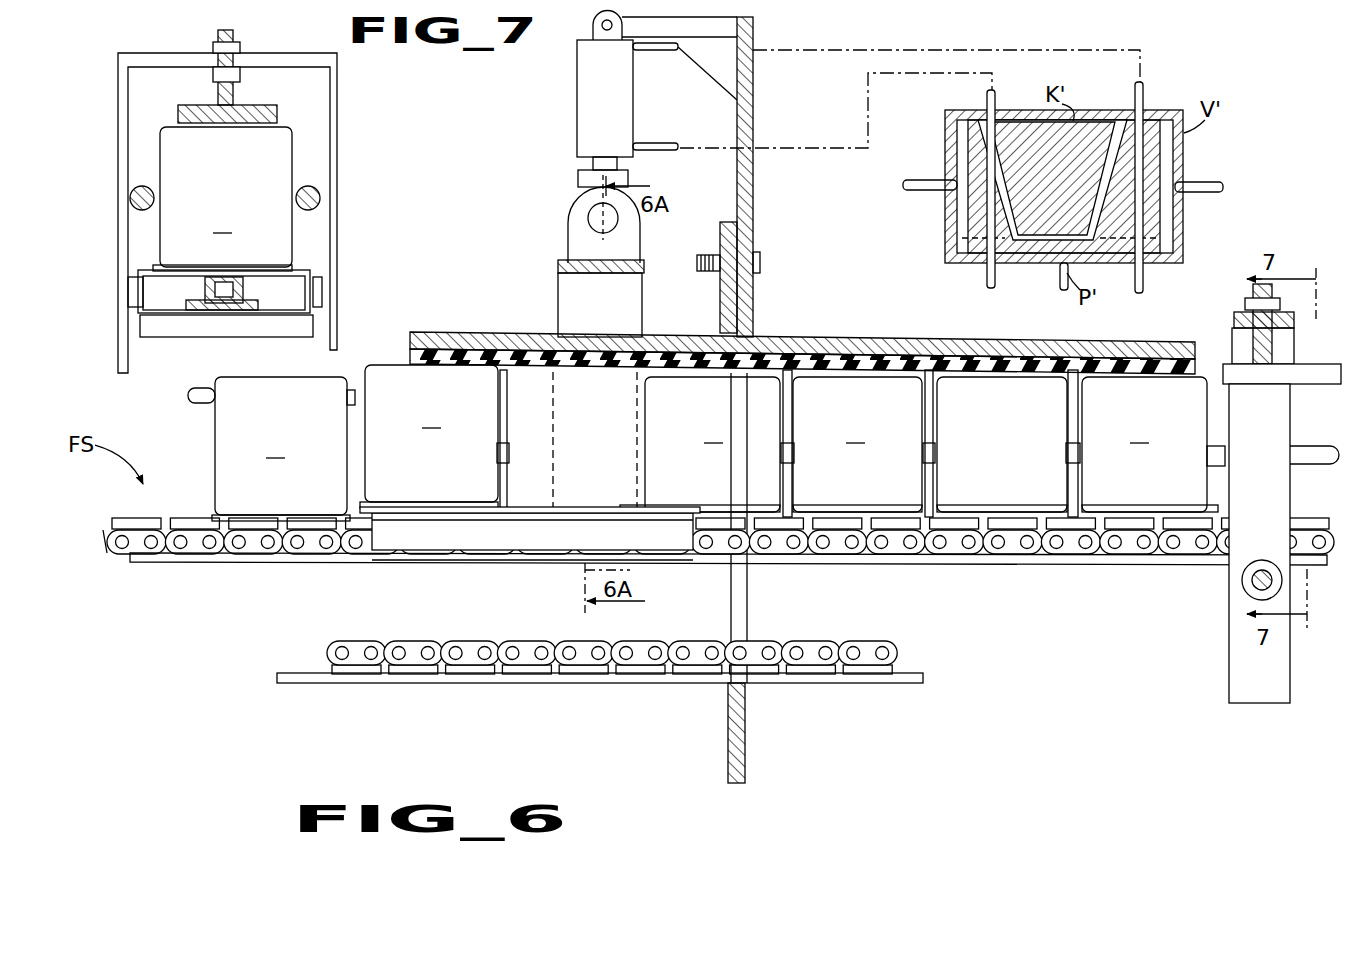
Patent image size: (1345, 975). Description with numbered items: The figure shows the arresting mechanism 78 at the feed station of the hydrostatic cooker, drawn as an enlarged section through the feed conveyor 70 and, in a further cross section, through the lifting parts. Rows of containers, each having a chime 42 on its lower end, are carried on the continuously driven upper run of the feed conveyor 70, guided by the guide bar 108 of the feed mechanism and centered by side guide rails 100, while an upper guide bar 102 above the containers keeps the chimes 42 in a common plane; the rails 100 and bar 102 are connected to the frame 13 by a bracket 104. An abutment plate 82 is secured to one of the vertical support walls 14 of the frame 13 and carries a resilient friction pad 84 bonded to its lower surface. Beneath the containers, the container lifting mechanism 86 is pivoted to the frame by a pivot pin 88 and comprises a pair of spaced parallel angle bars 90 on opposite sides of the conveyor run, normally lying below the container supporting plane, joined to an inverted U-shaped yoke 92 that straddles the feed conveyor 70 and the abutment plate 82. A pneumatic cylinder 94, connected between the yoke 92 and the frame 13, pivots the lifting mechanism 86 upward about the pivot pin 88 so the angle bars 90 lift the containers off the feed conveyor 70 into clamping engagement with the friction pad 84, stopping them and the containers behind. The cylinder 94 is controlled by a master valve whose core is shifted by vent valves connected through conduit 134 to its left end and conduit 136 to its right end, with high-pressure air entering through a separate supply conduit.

In FIG. 6, the frame 13 is at (756, 32).
In FIG. 6, the vertical support walls 14 is at (750, 99).
In FIG. 6, the pneumatic cylinder 94 is at (577, 100).
In FIG. 6, the inverted U-shaped yoke 92 is at (567, 306).
In FIG. 6, the arresting mechanism 78 is at (490, 300).
In FIG. 6, the abutment plate 82 is at (802, 338).
In FIG. 6, the resilient friction pad 84 is at (858, 356).
In FIG. 6, the conduit 134 is at (918, 172).
In FIG. 6, the conduit 136 is at (1210, 182).
In FIG. 6, the guide bar 108 is at (192, 397).
In FIG. 7, the feed conveyor 70 is at (198, 283).
In FIG. 6, the feed conveyor 70 is at (150, 521).
In FIG. 7, the chime 42 is at (214, 268).
In FIG. 6, the chime 42 is at (337, 514).
In FIG. 7, the container lifting mechanism 86 is at (317, 270).
In FIG. 6, the container lifting mechanism 86 is at (402, 548).
In FIG. 7, the angle bars 90 is at (313, 290).
In FIG. 6, the angle bars 90 is at (518, 578).
In FIG. 7, the brackets 104 is at (333, 98).
In FIG. 6, the brackets 104 is at (1238, 339).
In FIG. 7, the upper guide bar 102 is at (255, 126).
In FIG. 6, the upper guide bar 102 is at (1316, 366).
In FIG. 7, the side guide rails 100 is at (295, 198).
In FIG. 6, the side guide rails 100 is at (1314, 448).
In FIG. 7, the pivot pin 88 is at (167, 336).
In FIG. 6, the pivot pin 88 is at (1249, 582).